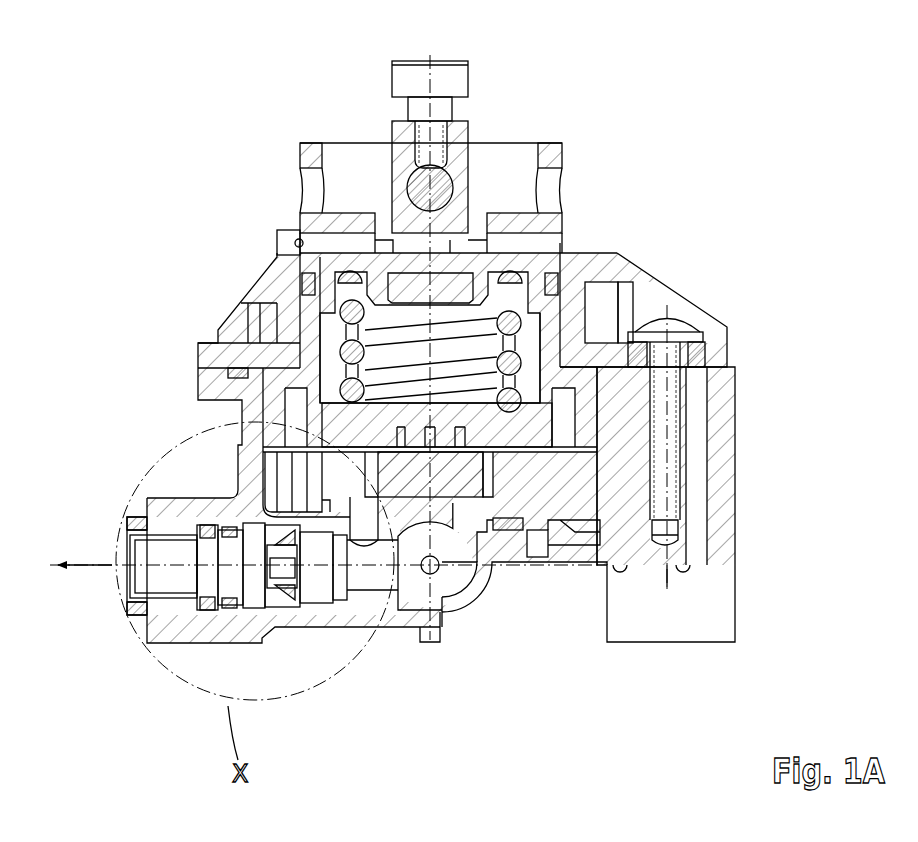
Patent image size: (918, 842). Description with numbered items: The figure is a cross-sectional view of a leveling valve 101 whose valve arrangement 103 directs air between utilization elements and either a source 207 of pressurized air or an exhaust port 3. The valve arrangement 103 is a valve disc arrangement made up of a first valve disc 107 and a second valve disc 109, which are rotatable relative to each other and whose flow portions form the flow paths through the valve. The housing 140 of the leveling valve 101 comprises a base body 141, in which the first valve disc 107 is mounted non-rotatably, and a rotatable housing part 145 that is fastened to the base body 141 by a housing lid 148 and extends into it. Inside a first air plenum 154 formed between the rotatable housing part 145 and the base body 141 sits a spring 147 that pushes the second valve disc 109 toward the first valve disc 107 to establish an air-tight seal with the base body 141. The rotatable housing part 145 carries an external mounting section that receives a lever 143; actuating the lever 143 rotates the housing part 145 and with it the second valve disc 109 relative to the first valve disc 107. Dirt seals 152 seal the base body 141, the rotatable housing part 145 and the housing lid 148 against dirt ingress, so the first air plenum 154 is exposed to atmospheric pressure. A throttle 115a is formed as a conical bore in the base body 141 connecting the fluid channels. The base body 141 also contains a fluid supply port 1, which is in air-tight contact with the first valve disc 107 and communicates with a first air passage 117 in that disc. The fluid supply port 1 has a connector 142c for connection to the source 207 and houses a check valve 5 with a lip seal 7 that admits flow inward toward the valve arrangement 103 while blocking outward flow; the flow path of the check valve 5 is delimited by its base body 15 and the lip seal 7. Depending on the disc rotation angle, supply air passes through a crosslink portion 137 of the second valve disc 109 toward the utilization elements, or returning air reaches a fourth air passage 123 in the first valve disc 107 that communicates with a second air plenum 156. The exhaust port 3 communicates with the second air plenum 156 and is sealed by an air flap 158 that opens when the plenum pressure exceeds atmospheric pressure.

The leveling valve 101 is at (240, 98).
The housing 140 is at (230, 195).
The rotatable housing part 145 is at (310, 150).
The lever 143 is at (440, 186).
The spring 147 is at (512, 280).
The dirt seal 152 is at (557, 288).
The housing lid 148 is at (677, 305).
The first air plenum 154 is at (332, 327).
The base body 141 is at (207, 388).
The second valve disc 109 is at (360, 423).
The first valve disc 107 is at (348, 486).
The first air passage 117 is at (336, 488).
The source of pressurized air 207 is at (85, 531).
The connector 142c is at (130, 601).
The base body of the check valve 15 is at (186, 640).
The lip seal 7 is at (292, 602).
The check valve 5 is at (318, 600).
The fluid supply port 1 is at (369, 550).
The throttle 115a is at (441, 574).
The exhaust port 3 is at (494, 512).
The air flap 158 is at (557, 536).
The crosslink portion 137 is at (440, 378).
The second air plenum 156 is at (592, 470).
The fourth air passage 123 is at (498, 468).
The valve arrangement 103 is at (527, 403).